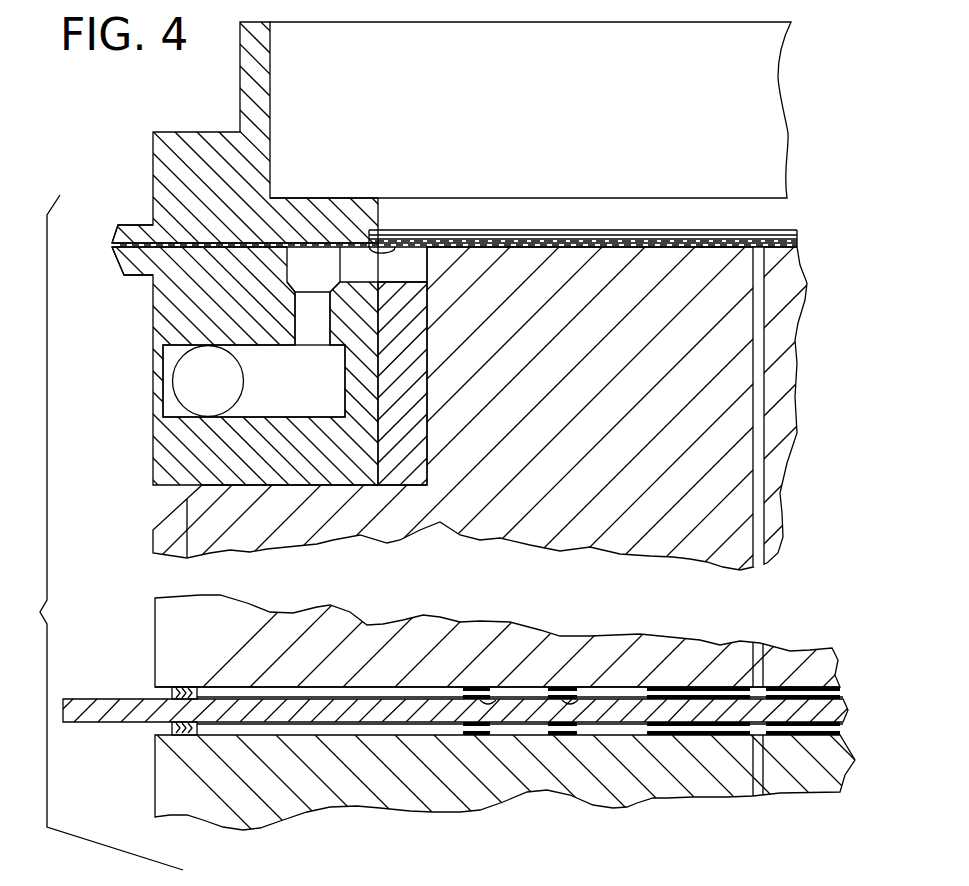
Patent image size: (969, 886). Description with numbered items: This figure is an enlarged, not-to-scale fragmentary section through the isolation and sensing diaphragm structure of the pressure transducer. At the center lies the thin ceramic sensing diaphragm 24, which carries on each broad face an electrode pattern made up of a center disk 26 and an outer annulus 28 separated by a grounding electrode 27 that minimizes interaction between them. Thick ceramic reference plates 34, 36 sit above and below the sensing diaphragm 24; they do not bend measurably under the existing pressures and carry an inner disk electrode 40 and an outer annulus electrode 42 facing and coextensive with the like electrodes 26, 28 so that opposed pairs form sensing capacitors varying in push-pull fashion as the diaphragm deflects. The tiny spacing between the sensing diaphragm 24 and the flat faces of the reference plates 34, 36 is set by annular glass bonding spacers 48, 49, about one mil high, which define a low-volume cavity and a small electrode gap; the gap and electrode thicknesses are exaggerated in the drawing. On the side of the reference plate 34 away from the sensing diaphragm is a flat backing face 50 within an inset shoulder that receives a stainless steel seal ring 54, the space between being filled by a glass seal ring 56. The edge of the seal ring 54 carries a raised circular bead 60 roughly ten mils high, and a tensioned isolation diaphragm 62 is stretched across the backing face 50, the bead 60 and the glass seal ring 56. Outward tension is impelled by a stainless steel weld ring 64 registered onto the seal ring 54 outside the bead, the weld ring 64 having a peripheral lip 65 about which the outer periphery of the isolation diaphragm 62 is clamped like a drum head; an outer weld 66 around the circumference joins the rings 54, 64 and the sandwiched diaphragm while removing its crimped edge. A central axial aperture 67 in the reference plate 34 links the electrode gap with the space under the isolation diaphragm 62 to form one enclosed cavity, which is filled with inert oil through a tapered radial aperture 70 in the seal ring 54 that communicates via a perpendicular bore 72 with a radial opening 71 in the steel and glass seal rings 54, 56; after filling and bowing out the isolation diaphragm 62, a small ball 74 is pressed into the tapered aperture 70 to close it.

The ceramic sensing diaphragm 24 is at (820, 712).
The center disk electrode 26 is at (826, 703).
The grounding electrode 27 is at (597, 690).
The outer annulus electrode 28 is at (514, 695).
The ceramic reference plate 34 is at (713, 494).
The ceramic reference plate 36 is at (633, 785).
The inner disk electrode 40 is at (819, 688).
The outer annulus electrode 42 is at (478, 690).
The annular spacer 48 is at (170, 693).
The annular spacer 49 is at (170, 730).
The backing face 50 is at (717, 247).
The stainless steel seal ring 54 is at (310, 458).
The glass seal ring 56 is at (395, 328).
The raised circular bead 60 is at (397, 233).
The tensioned isolation diaphragm 62 is at (502, 240).
The stainless steel weld ring 64 is at (187, 177).
The peripheral lip 65 is at (126, 232).
The outer weld 66 is at (112, 245).
The central axial aperture 67 is at (758, 346).
The tapered radial aperture 70 is at (252, 407).
The radial opening 71 is at (408, 260).
The perpendicular bore 72 is at (307, 335).
The ball 74 is at (188, 382).